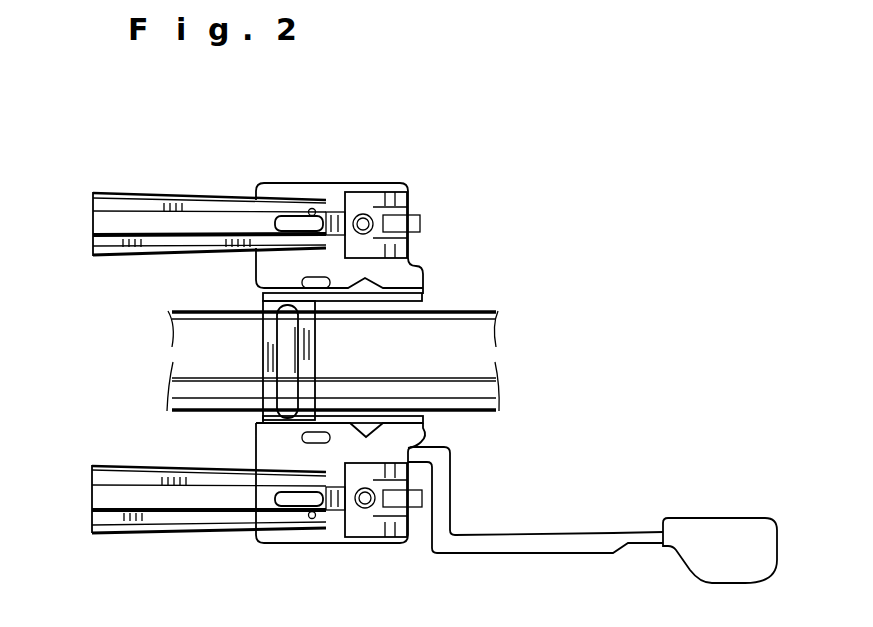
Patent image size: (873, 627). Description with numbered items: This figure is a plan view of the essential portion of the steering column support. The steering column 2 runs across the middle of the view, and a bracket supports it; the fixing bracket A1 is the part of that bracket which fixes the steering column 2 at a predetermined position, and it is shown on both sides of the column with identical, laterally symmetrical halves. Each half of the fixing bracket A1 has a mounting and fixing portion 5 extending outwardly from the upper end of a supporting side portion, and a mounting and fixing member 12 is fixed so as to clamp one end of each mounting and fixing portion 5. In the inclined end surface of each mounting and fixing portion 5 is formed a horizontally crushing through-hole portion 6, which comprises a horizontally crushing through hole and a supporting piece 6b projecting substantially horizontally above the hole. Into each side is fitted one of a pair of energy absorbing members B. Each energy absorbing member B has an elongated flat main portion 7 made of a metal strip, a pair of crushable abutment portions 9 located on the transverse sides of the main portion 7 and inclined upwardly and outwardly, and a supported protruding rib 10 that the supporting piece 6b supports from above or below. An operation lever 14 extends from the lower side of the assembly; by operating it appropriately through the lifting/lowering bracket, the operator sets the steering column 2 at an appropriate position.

The steering column 2 is at (462, 306).
The mounting and fixing portion 5 is at (333, 180).
The horizontally crushing through-hole portion 6 is at (312, 209).
The supporting piece 6b is at (290, 222).
The main portion 7 is at (100, 241).
The crushable abutment portion 9 is at (130, 192).
The supported protruding rib 10 is at (100, 223).
The mounting and fixing member 12 is at (372, 193).
The operation lever 14 is at (557, 540).
The fixing bracket A1 is at (413, 261).
The energy absorbing member B is at (190, 359).